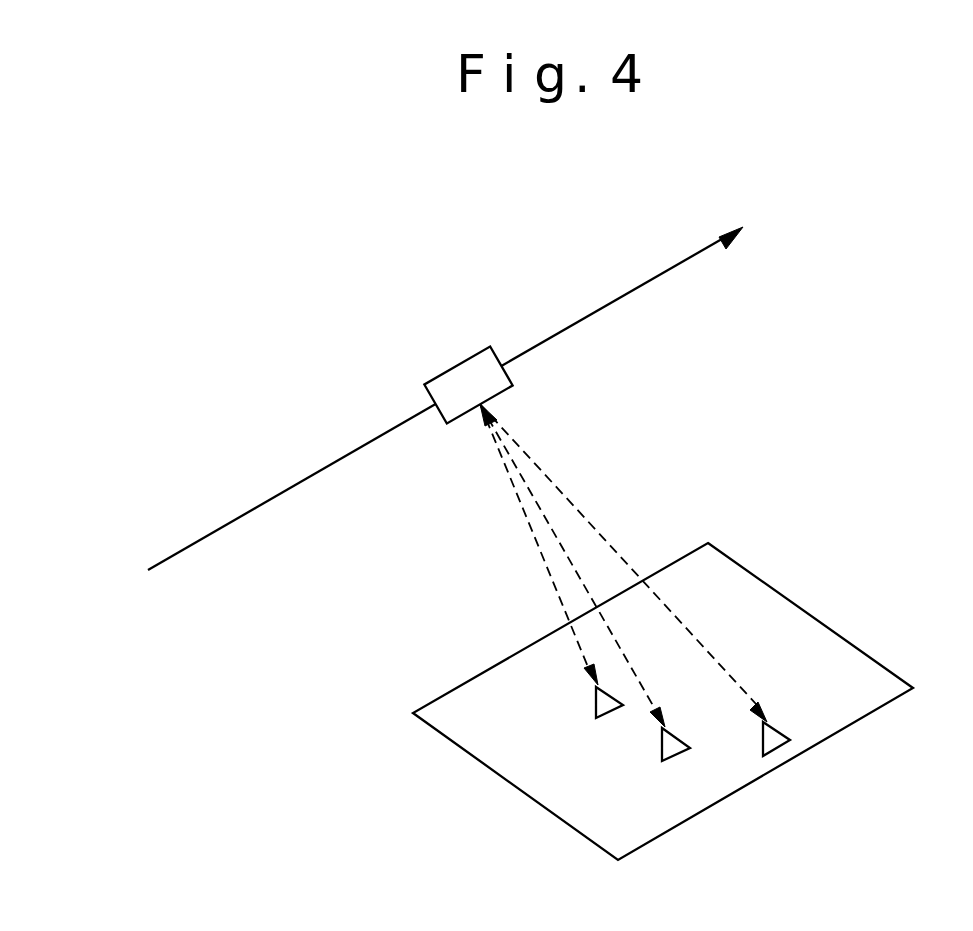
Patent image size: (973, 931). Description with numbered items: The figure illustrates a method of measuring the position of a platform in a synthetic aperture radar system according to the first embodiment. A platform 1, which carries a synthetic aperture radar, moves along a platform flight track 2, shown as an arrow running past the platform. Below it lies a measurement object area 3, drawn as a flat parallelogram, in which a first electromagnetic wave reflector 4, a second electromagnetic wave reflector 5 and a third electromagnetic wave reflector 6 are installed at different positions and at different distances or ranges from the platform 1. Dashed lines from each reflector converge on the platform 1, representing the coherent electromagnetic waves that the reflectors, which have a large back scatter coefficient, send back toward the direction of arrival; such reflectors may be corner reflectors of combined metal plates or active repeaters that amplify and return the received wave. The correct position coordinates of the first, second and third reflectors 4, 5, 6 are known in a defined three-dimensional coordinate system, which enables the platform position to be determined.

The platform 1 is at (457, 363).
The platform flight track 2 is at (673, 265).
The measurement object area 3 is at (863, 648).
The first electromagnetic wave reflector 4 is at (603, 718).
The second electromagnetic wave reflector 5 is at (670, 760).
The third electromagnetic wave reflector 6 is at (790, 747).